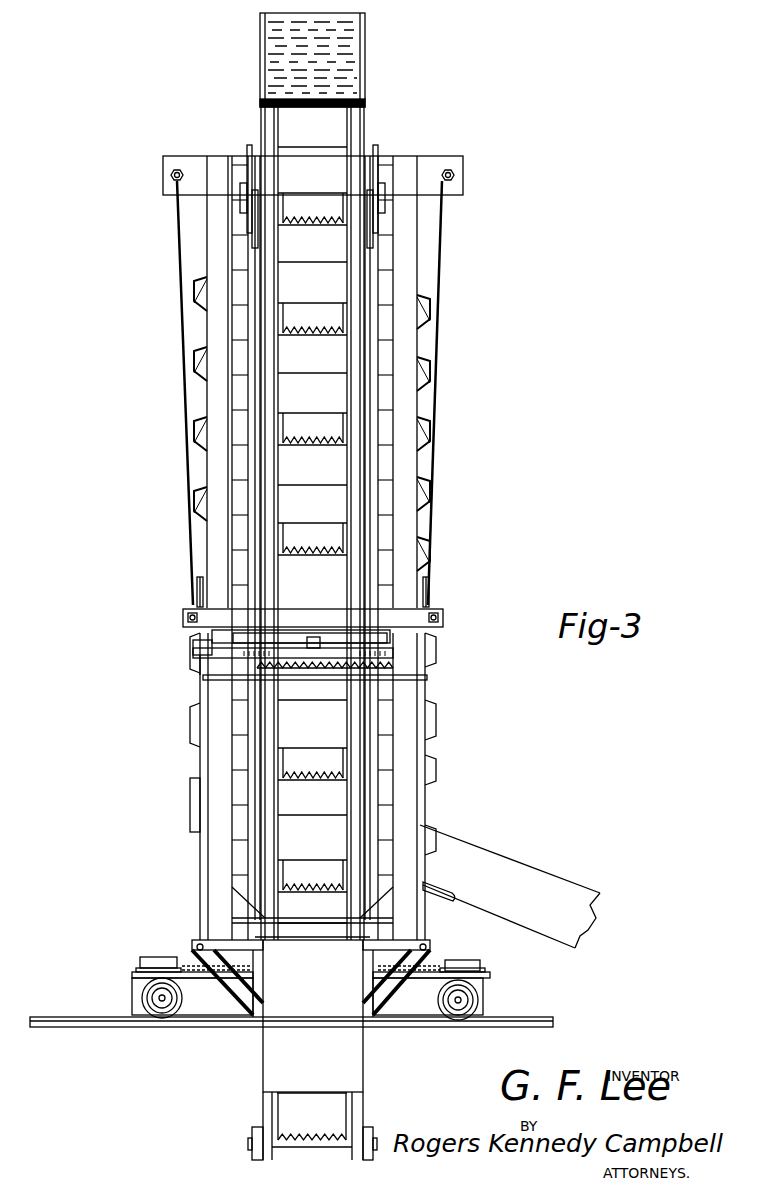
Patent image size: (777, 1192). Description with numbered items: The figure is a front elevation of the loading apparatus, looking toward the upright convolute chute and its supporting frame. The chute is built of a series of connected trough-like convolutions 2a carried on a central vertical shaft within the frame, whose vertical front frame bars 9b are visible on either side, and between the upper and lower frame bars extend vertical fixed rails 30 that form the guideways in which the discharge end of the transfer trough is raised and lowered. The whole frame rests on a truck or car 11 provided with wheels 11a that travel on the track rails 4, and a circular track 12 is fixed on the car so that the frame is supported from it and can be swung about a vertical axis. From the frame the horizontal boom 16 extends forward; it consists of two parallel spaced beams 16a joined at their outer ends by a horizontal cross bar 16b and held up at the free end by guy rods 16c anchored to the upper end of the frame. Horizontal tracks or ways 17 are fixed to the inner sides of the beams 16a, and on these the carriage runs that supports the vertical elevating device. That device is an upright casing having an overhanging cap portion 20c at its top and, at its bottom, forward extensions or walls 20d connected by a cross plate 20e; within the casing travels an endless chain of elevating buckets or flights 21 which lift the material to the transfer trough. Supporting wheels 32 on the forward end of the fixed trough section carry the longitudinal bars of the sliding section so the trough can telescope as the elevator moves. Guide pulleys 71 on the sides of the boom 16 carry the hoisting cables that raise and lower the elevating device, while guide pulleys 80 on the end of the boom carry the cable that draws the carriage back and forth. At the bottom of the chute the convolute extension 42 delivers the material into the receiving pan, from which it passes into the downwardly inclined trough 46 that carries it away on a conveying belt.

The overhanging cap portion 20c is at (362, 40).
The supporting wheels 32 is at (385, 165).
The vertical fixed rails 30 is at (383, 290).
The convolutions 2a is at (428, 322).
The vertical front frame bars 9b is at (405, 405).
The guy rods 16c is at (190, 490).
The guide pulleys 71 is at (197, 587).
The horizontal cross bar 16b is at (430, 555).
The horizontal boom 16 is at (416, 625).
The horizontal tracks or ways 17 is at (393, 667).
The parallel spaced beams 16a is at (418, 676).
The guide pulleys 80 is at (212, 680).
The convolute extension 42 is at (193, 805).
The endless chain of elevating buckets or flights 21 is at (345, 868).
The downwardly inclined trough 46 is at (510, 865).
The circular track 12 is at (172, 960).
The truck or car 11 is at (480, 980).
The wheels 11a is at (478, 1003).
The track rails 4 is at (133, 1022).
The cross plate 20e is at (277, 1067).
The forward extensions or walls 20d is at (365, 1102).